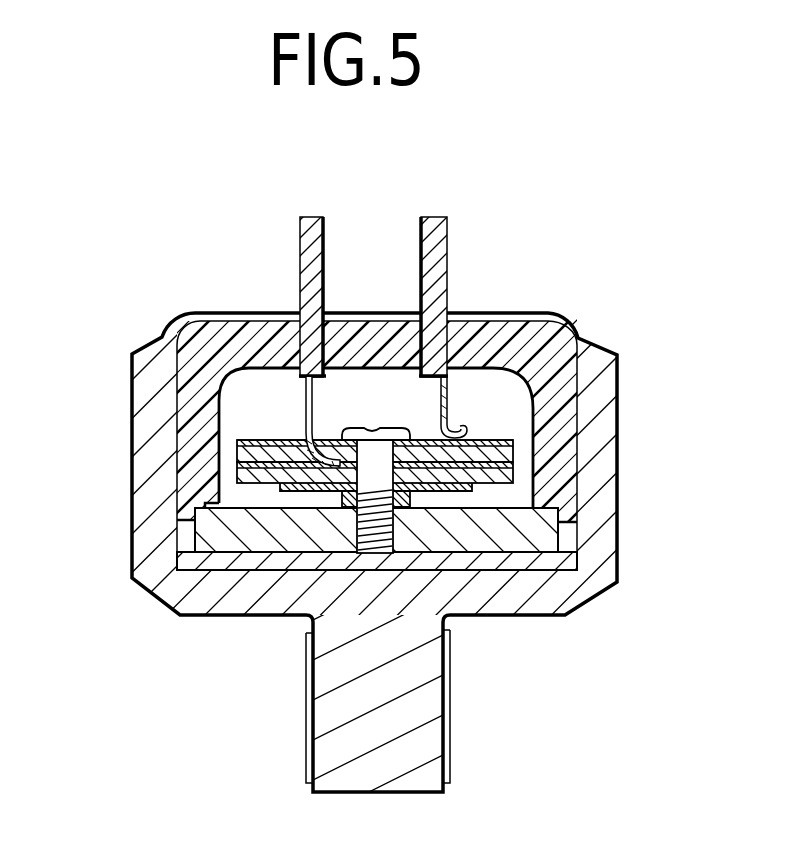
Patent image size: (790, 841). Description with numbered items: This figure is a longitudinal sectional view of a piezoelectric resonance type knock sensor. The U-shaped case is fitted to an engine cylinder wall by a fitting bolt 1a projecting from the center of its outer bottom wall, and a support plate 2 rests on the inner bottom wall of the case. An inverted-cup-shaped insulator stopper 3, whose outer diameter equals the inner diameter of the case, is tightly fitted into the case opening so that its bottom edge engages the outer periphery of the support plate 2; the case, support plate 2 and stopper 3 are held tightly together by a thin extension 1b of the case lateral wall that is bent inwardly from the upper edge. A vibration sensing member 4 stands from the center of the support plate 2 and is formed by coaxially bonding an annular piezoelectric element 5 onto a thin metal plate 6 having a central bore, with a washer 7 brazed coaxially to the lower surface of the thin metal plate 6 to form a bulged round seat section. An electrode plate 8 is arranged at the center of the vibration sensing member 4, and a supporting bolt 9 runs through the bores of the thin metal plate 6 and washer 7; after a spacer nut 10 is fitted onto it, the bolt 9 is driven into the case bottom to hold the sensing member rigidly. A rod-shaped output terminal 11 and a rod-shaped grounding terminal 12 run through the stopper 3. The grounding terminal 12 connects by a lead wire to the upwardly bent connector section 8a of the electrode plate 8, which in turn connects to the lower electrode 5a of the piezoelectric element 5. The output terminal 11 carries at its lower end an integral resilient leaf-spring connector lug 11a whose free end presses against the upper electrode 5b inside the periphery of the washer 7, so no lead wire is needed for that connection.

The fitting bolt 1a is at (310, 688).
The thin extension 1b is at (558, 313).
The support plate 2 is at (210, 556).
The insulator stopper 3 is at (499, 342).
The vibration sensing member 4 is at (509, 437).
The annular piezoelectric element 5 is at (512, 458).
The lower electrode 5a is at (237, 464).
The upper electrode 5b is at (237, 443).
The thin metal plate 6 is at (512, 473).
The washer 7 is at (472, 488).
The electrode plate 8 is at (558, 548).
The connector section 8a is at (305, 435).
The supporting bolt 9 is at (353, 428).
The spacer nut 10 is at (437, 557).
The output terminal 11 is at (432, 215).
The connector lug 11a is at (450, 423).
The grounding terminal 12 is at (315, 215).